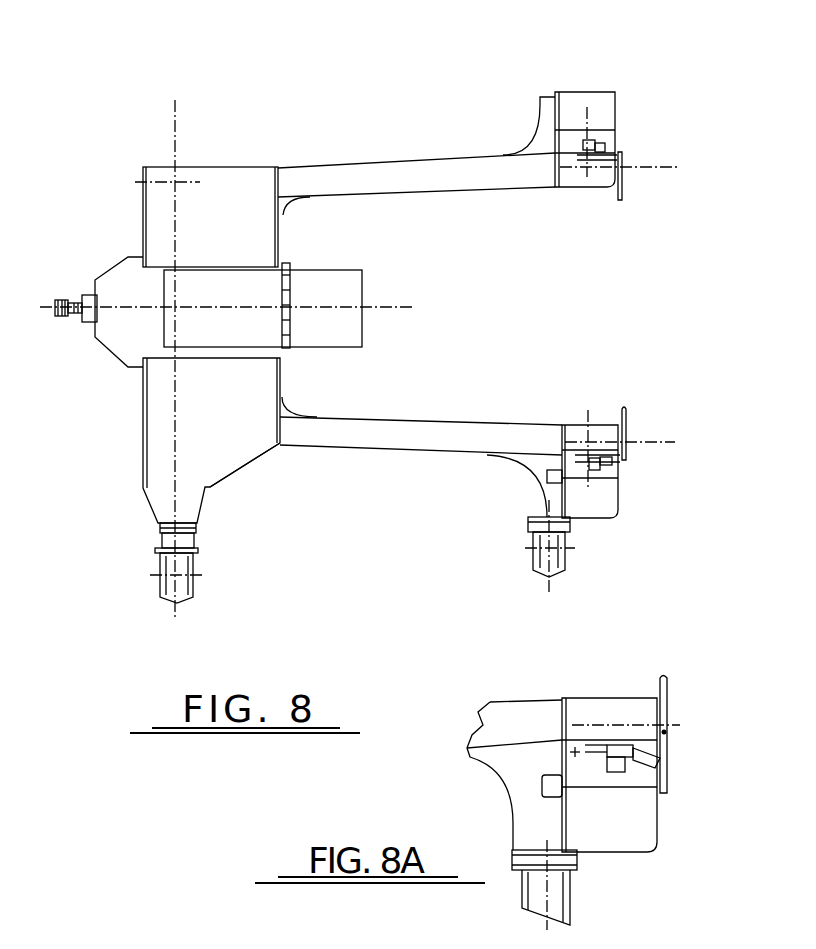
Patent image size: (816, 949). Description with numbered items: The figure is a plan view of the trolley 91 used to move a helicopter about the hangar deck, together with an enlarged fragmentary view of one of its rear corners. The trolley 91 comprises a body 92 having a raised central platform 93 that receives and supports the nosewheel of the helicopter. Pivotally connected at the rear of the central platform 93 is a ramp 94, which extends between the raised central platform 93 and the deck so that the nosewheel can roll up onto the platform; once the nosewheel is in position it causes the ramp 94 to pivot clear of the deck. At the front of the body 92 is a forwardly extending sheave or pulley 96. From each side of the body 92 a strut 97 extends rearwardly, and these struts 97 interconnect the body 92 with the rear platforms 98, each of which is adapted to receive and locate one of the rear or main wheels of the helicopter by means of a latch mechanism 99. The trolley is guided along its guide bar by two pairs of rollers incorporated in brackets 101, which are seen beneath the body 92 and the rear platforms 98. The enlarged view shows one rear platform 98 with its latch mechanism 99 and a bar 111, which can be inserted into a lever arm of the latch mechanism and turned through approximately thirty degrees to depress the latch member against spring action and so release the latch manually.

In FIG. 8, the trolley 91 is at (252, 462).
In FIG. 8, the body 92 is at (165, 448).
In FIG. 8, the central platform 93 is at (237, 330).
In FIG. 8, the ramp 94 is at (343, 292).
In FIG. 8, the sheave or pulley 96 is at (57, 313).
In FIG. 8, the struts 97 is at (447, 175).
In FIG. 8, the rear platforms 98 is at (592, 103).
In FIG. 8A, the rear platforms 98 is at (623, 813).
In FIG. 8, the latch mechanism 99 is at (622, 140).
In FIG. 8A, the latch mechanism 99 is at (650, 772).
In FIG. 8, the brackets 101 is at (182, 567).
In FIG. 8A, the brackets 101 is at (555, 917).
In FIG. 8, the bar 111 is at (620, 193).
In FIG. 8A, the bar 111 is at (663, 697).